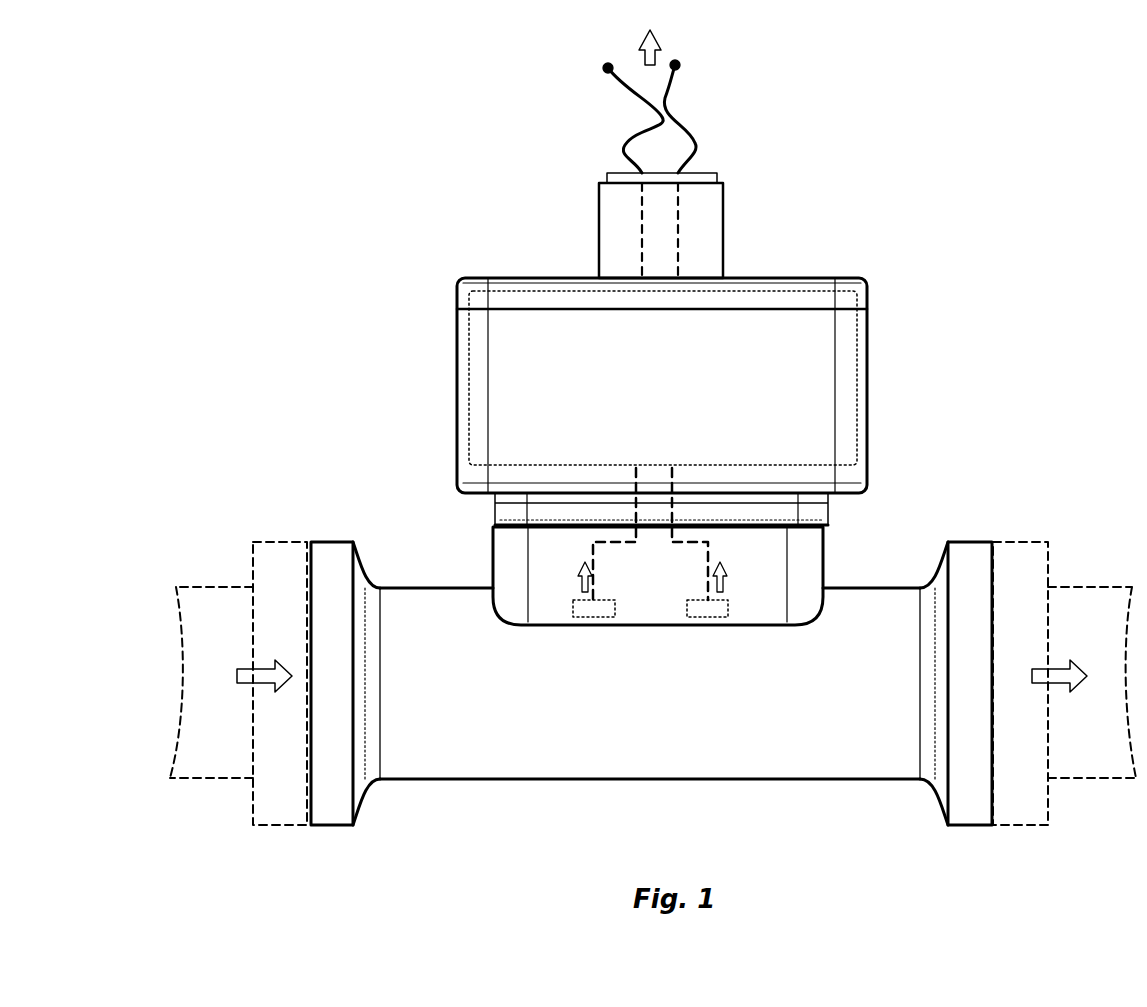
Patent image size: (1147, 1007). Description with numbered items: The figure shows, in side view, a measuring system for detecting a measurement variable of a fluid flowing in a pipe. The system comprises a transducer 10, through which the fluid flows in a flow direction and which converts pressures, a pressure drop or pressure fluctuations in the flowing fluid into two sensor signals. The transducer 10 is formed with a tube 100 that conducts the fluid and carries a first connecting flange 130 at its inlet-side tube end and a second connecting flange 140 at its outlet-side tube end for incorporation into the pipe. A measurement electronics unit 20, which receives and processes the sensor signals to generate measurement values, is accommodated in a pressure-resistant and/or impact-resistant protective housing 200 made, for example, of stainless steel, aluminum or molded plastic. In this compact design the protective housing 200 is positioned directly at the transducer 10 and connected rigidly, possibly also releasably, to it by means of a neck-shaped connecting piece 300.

The transducer 10 is at (653, 635).
The measurement electronics unit 20 is at (704, 327).
The tube 100 is at (745, 758).
The first connecting flange 130 is at (328, 553).
The second connecting flange 140 is at (968, 560).
The protective housing 200 is at (465, 298).
The neck-shaped connecting piece 300 is at (813, 549).